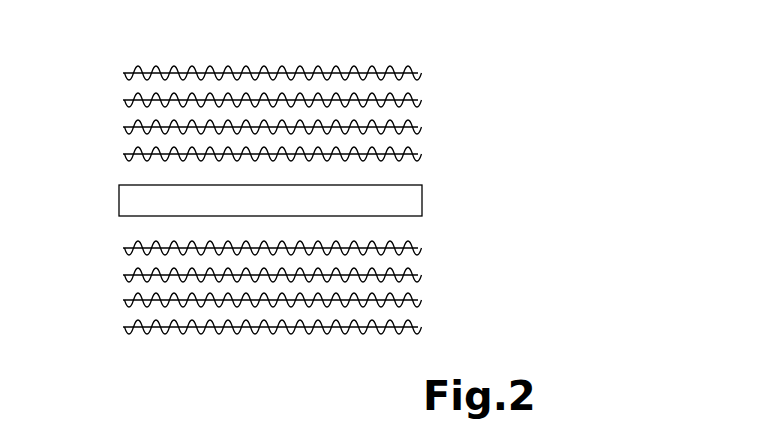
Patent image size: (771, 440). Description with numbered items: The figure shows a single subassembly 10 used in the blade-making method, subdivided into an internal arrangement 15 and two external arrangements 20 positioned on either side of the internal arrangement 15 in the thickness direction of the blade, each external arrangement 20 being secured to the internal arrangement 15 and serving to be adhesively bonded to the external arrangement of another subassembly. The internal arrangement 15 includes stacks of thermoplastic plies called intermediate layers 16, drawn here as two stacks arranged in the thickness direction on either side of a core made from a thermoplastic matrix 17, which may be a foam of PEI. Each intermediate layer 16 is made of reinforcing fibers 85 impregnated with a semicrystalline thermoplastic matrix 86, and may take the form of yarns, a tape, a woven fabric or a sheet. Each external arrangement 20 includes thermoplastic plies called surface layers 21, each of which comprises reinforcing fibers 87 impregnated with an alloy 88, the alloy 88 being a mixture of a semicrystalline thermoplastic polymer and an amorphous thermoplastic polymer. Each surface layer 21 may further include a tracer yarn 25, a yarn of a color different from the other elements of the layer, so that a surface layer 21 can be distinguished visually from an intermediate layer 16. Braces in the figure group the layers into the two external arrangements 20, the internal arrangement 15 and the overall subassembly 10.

The subassembly 10 is at (333, 204).
The internal arrangement 15 is at (288, 211).
The intermediate layer 16 is at (118, 128).
The thermoplastic matrix 17 is at (119, 203).
The external arrangement 20 is at (306, 208).
The surface layer 21 is at (117, 100).
The tracer yarn 25 is at (262, 100).
The reinforcing fibers 85 is at (434, 172).
The semicrystalline thermoplastic matrix 86 is at (128, 104).
The reinforcing fibers 87 is at (405, 80).
The alloy 88 is at (383, 71).